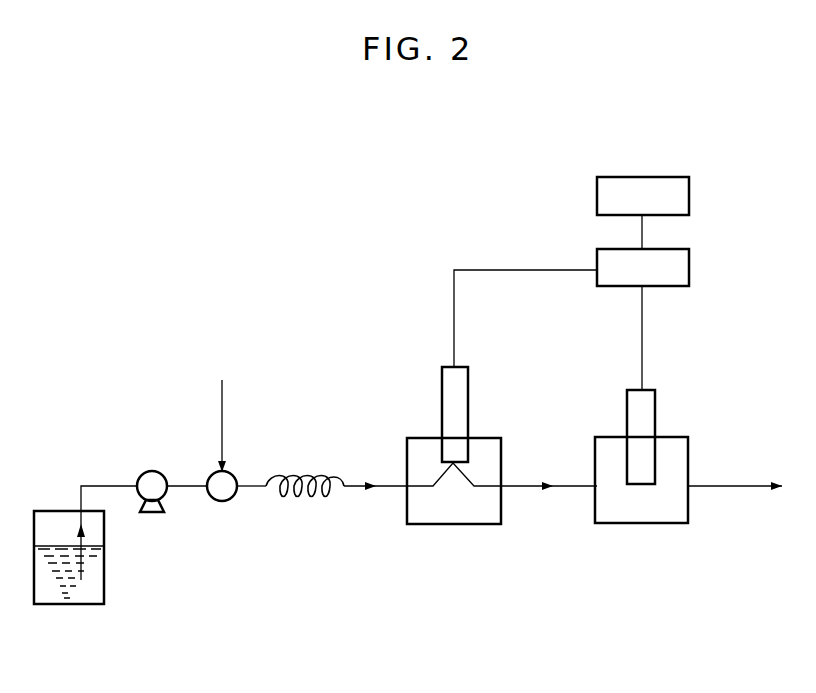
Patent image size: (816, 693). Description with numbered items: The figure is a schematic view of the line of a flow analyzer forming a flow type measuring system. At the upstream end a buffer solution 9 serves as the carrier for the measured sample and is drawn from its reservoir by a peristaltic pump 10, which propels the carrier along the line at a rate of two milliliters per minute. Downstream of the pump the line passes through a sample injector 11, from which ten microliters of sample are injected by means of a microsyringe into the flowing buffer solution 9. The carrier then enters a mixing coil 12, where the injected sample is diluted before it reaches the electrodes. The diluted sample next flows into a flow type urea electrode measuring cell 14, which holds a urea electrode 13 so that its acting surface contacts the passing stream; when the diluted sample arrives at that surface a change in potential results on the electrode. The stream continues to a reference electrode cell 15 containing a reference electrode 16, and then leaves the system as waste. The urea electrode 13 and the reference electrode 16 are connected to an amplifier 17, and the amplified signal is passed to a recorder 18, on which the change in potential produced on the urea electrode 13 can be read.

The buffer solution 9 is at (53, 582).
The peristaltic pump 10 is at (151, 471).
The sample injector 11 is at (222, 501).
The mixing coil 12 is at (300, 472).
The urea electrode 13 is at (468, 388).
The flow type urea electrode measuring cell 14 is at (450, 510).
The reference electrode cell 15 is at (643, 508).
The reference electrode 16 is at (652, 406).
The amplifier 17 is at (689, 265).
The recorder 18 is at (689, 195).